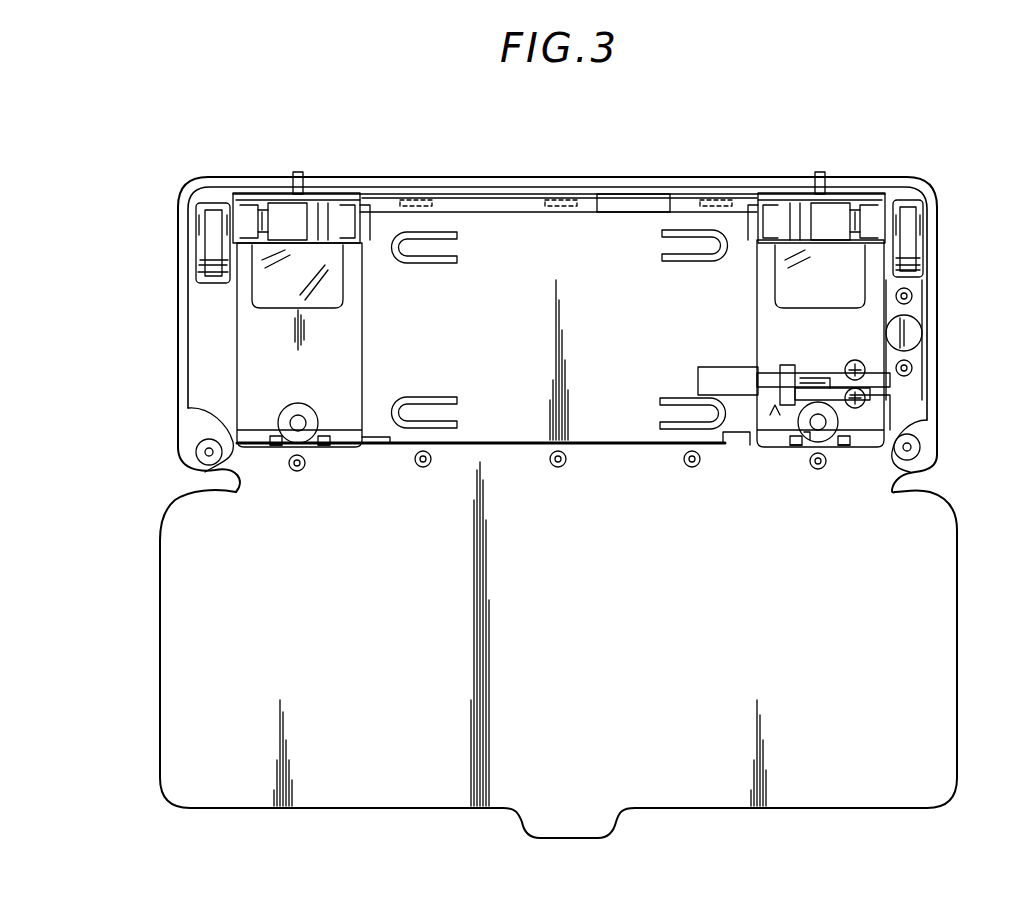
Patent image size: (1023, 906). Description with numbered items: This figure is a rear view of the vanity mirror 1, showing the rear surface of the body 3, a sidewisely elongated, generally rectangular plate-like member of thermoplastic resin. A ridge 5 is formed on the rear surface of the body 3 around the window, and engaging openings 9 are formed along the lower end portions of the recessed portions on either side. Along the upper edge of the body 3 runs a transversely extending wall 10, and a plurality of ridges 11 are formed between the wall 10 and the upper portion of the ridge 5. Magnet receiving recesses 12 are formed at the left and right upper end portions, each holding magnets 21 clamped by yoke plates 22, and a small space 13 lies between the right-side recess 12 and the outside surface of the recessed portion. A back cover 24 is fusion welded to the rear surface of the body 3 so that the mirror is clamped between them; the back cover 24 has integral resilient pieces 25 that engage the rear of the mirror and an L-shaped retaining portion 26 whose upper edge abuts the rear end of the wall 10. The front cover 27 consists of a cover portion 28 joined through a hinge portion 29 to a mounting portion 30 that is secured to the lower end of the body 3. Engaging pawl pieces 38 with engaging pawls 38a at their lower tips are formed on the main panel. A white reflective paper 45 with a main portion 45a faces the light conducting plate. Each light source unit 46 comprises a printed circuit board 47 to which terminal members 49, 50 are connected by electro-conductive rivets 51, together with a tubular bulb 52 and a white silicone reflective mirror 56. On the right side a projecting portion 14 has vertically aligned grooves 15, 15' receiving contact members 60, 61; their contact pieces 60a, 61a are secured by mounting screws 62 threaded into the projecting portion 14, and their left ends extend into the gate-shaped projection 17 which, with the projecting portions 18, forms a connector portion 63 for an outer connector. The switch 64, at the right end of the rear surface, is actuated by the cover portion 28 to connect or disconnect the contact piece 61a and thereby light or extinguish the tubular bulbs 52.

The vanity mirror 1 is at (938, 170).
The body 3 is at (188, 322).
The ridge 5 is at (378, 446).
The engaging openings 9 is at (278, 432).
The wall 10 is at (700, 194).
The slot 11 is at (416, 200).
The magnet receiving recesses 12 is at (210, 262).
The small space 13 is at (800, 255).
The projecting portion 14 is at (855, 360).
The groove 15 is at (823, 350).
The groove 15' is at (899, 461).
The gate-shaped projection 17 is at (787, 366).
The projecting portions 18 is at (748, 370).
The magnets 21 is at (212, 240).
The yoke plates 22 is at (200, 205).
The back cover 24 is at (600, 194).
The resilient pieces 25 is at (440, 250).
The retaining portion 26 is at (487, 196).
The front cover 27 is at (365, 808).
The cover portion 28 is at (240, 808).
The hinge portion 29 is at (236, 492).
The mounting portion 30 is at (200, 412).
The engaging pawl pieces 38 is at (274, 447).
The engaging pawls 38a is at (278, 448).
The reflective paper 45 is at (325, 300).
The main portion 45a is at (335, 285).
The light source unit 46 is at (290, 215).
The printed circuit board 47 is at (243, 200).
The terminal member 49 is at (280, 215).
The terminal member 50 is at (350, 210).
The rivets 51 is at (258, 196).
The tubular bulb 52 is at (366, 225).
The reflective mirror 56 is at (325, 215).
The contact member 60 is at (912, 370).
The contact piece 60a is at (822, 378).
The contact member 61 is at (912, 300).
The contact piece 61a is at (808, 442).
The mounting screws 62 is at (870, 395).
The connector portion 63 is at (775, 440).
The switch 64 is at (915, 335).